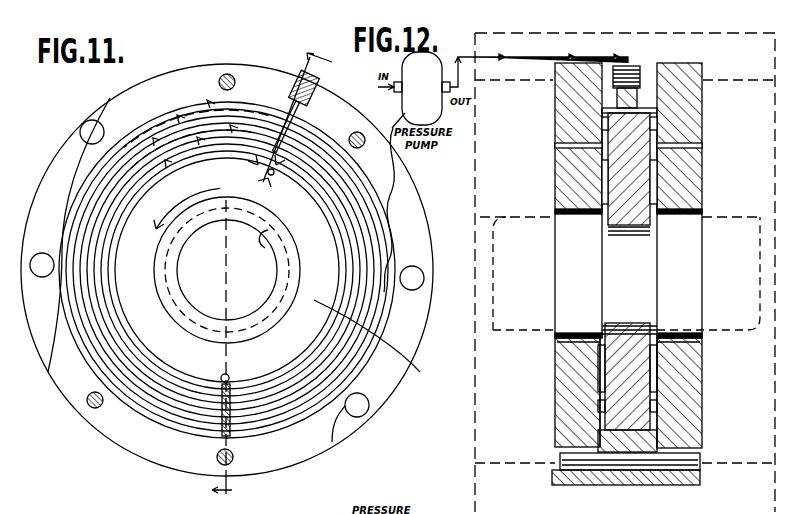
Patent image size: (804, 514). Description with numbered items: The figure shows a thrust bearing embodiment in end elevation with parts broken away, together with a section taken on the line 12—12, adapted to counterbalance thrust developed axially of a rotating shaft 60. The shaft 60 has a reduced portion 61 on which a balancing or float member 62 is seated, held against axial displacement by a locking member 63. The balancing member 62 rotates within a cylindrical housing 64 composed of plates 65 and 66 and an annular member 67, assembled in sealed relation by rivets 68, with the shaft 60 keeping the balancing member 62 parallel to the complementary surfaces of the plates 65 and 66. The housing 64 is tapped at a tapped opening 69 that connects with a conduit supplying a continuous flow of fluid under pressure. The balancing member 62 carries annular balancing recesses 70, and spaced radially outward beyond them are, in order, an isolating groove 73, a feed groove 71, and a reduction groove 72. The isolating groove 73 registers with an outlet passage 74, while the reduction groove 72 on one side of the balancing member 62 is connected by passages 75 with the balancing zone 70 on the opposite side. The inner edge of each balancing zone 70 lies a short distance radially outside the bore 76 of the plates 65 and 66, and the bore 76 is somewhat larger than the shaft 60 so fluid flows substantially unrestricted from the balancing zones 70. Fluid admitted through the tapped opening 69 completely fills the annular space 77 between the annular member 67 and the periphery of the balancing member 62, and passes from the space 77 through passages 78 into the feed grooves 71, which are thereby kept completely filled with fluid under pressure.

In FIG. 11, the section line 12— 12 is at (277, 273).
In FIG. 12, the rotating shaft 60 is at (520, 335).
In FIG. 11, the reduced portion 61 is at (262, 240).
In FIG. 12, the reduced portion 61 is at (620, 240).
In FIG. 11, the balancing or float member 62 is at (379, 344).
In FIG. 12, the balancing or float member 62 is at (702, 190).
In FIG. 12, the locking member 63 is at (735, 338).
In FIG. 12, the cylindrical housing 64 is at (700, 410).
In FIG. 12, the plate 65 is at (690, 430).
In FIG. 11, the plate 66 is at (385, 395).
In FIG. 12, the plate 66 is at (570, 417).
In FIG. 11, the annular member 67 is at (252, 70).
In FIG. 12, the annular member 67 is at (635, 485).
In FIG. 11, the rivets 68 is at (360, 418).
In FIG. 12, the rivets 68 is at (685, 459).
In FIG. 11, the tapped opening 69 is at (322, 80).
In FIG. 12, the tapped opening 69 is at (635, 63).
In FIG. 11, the annular balancing recesses 70 is at (323, 243).
In FIG. 12, the annular balancing recesses 70 is at (702, 162).
In FIG. 11, the feed groove 71 is at (300, 140).
In FIG. 12, the feed groove 71 is at (603, 132).
In FIG. 11, the reduction groove 72 is at (226, 269).
In FIG. 12, the reduction groove 72 is at (604, 122).
In FIG. 11, the isolating groove 73 is at (310, 173).
In FIG. 12, the isolating groove 73 is at (603, 150).
In FIG. 12, the outlet passage 74 is at (575, 145).
In FIG. 11, the passages 75 is at (232, 395).
In FIG. 12, the passages 75 is at (624, 165).
In FIG. 12, the bore 76 is at (560, 338).
In FIG. 11, the annular space 77 is at (285, 122).
In FIG. 12, the annular space 77 is at (585, 442).
In FIG. 12, the passages 78 is at (605, 112).